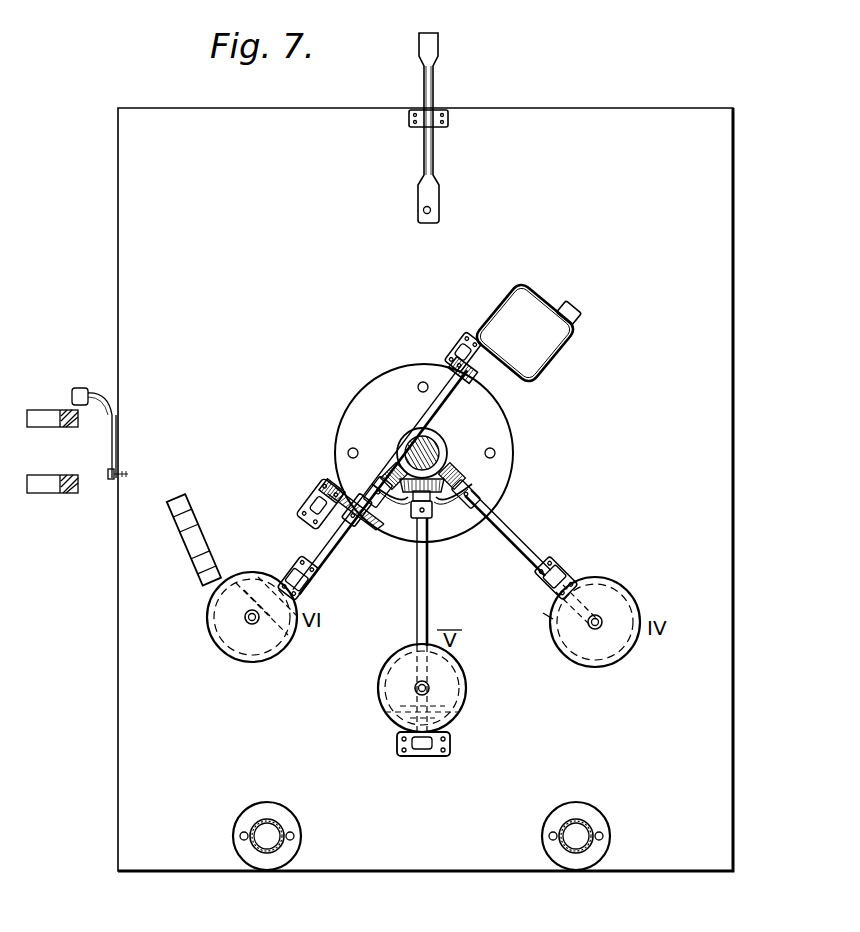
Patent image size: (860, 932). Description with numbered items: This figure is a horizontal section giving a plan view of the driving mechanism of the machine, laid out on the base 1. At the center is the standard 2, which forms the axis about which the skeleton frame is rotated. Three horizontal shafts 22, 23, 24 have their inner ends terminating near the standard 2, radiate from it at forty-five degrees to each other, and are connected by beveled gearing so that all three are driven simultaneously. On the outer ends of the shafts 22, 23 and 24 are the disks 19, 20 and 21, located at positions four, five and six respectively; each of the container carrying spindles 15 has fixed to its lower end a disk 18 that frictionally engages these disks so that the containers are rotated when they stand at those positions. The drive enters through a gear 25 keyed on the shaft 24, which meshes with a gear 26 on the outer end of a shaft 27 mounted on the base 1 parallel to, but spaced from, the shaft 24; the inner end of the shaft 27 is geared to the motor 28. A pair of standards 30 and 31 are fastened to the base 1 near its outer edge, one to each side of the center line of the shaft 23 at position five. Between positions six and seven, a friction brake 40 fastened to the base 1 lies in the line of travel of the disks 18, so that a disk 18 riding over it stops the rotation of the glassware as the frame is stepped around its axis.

The base 1 is at (380, 452).
The standard 2 is at (443, 441).
The container carrying spindle 15 is at (248, 622).
The disk 18 is at (222, 614).
The disk 19 is at (588, 578).
The disk 20 is at (459, 725).
The disk 21 is at (238, 580).
The horizontal shaft 22 is at (522, 547).
The horizontal shaft 23 is at (423, 578).
The horizontal shaft 24 is at (320, 557).
The gear 25 is at (371, 532).
The gear 26 is at (327, 483).
The shaft 27 is at (424, 453).
The motor 28 is at (529, 327).
The standard 30 is at (573, 822).
The standard 31 is at (277, 820).
The friction brake 40 is at (197, 543).